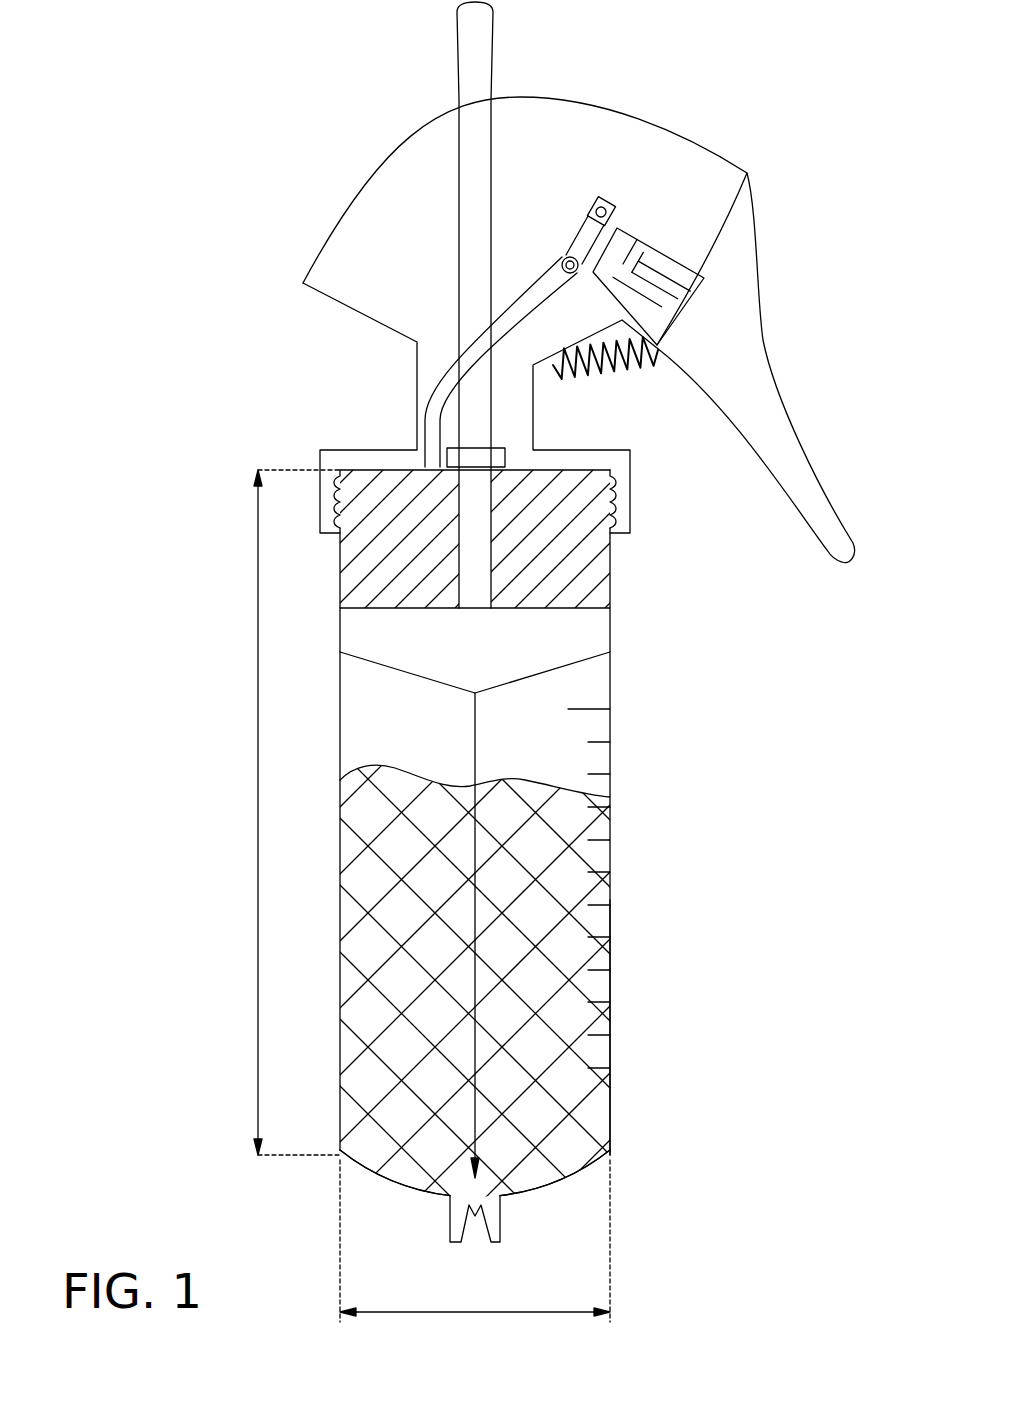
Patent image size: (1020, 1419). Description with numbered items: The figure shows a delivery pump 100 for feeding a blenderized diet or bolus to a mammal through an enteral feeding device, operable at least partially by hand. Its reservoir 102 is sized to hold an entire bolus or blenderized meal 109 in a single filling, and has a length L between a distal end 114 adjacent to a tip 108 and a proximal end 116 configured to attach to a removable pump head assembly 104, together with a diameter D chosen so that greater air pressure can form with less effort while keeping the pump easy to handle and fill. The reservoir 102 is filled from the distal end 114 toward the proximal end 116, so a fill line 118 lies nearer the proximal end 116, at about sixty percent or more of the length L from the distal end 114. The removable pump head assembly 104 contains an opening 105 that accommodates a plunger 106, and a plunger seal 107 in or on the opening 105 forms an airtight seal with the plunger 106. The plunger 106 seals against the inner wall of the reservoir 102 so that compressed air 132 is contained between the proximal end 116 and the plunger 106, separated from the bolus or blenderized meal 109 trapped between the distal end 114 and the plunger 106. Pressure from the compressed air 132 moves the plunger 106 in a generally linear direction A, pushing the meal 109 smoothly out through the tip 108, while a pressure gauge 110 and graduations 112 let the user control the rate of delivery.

The delivery pump 100 is at (147, 457).
The reservoir 102 is at (612, 925).
The removable pump head assembly 104 is at (770, 140).
The opening 105 is at (532, 468).
The plunger 106 is at (595, 636).
The plunger seal 107 is at (600, 368).
The tip 108 is at (476, 1218).
The bolus or blenderized meal 109 is at (548, 830).
The pressure gauge 110 is at (571, 256).
The graduations 112 is at (612, 1078).
The distal end 114 is at (606, 1158).
The proximal end 116 is at (612, 478).
The fill line 118 is at (593, 711).
The compressed air 132 is at (595, 555).